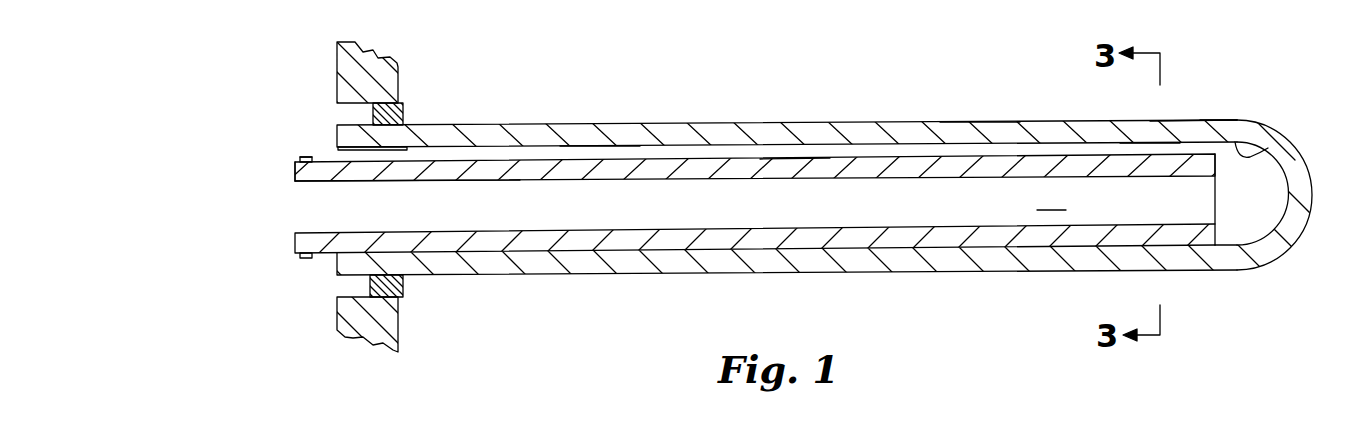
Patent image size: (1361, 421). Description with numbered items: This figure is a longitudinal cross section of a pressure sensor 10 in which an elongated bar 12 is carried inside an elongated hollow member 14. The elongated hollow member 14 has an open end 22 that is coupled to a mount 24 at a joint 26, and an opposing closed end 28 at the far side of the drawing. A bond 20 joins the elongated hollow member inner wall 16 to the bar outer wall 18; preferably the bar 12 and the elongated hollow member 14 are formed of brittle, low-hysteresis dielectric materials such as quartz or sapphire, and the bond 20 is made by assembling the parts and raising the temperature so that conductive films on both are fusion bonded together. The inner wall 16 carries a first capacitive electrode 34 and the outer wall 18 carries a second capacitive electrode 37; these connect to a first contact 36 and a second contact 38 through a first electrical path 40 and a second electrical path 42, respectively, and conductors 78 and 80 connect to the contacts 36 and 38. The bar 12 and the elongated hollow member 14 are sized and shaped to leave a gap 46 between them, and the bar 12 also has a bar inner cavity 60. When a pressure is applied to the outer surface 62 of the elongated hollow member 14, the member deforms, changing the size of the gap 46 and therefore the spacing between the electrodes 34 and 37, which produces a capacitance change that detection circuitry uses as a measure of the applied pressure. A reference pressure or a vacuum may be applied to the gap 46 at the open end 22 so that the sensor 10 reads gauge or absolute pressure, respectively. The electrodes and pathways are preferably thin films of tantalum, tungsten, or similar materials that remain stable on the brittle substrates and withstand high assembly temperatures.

The pressure sensor 10 is at (1241, 46).
The elongated bar 12 is at (763, 170).
The elongated hollow member 14 is at (1043, 118).
The elongated hollow member inner wall 16 is at (1264, 124).
The bar outer wall 18 is at (512, 158).
The bond 20 is at (1002, 244).
The open end 22 is at (237, 142).
The mount 24 is at (362, 48).
The joint 26 is at (403, 112).
The closed end 28 is at (1294, 257).
The first capacitive electrode 34 is at (1168, 143).
The first contact 36 is at (300, 258).
The second capacitive electrode 37 is at (1218, 130).
The second contact 38 is at (302, 156).
The first electrical path 40 is at (590, 143).
The second electrical path 42 is at (790, 158).
The gap 46 is at (1142, 148).
The bar inner cavity 60 is at (1054, 196).
The outer surface 62 is at (980, 122).
The conductor 78 is at (302, 260).
The conductor 80 is at (306, 157).